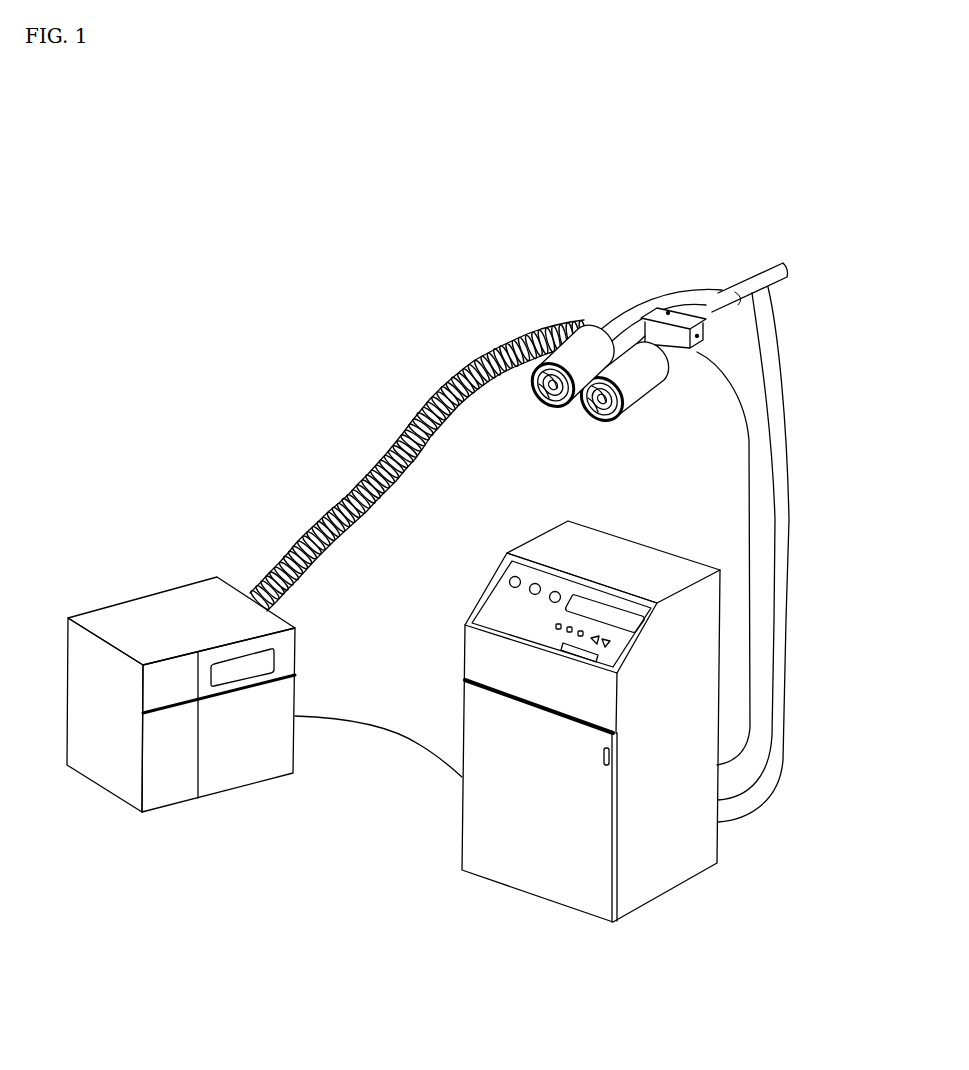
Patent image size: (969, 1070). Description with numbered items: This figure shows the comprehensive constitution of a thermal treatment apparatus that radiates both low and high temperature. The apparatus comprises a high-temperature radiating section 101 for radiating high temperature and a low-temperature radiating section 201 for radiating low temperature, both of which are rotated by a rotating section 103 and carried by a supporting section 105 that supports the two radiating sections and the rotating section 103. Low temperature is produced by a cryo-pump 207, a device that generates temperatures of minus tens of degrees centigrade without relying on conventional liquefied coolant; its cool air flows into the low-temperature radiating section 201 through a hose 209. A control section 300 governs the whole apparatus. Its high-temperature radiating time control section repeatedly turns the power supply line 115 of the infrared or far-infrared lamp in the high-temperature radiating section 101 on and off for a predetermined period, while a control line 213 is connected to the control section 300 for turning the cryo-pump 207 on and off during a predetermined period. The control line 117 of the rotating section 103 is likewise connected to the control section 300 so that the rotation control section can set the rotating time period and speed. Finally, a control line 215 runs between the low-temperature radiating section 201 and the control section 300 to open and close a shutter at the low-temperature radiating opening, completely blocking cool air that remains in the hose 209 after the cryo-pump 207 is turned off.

The high-temperature radiating section 101 is at (607, 428).
The low-temperature radiating section 201 is at (554, 408).
The rotating section 103 is at (678, 352).
The supporting section 105 is at (722, 292).
The power supply line 115 is at (777, 327).
The control line 215 is at (773, 407).
The control line 117 is at (750, 485).
The hose 209 is at (422, 448).
The cryo-pump 207 is at (108, 622).
The control line 213 is at (349, 728).
The control section 300 is at (456, 855).